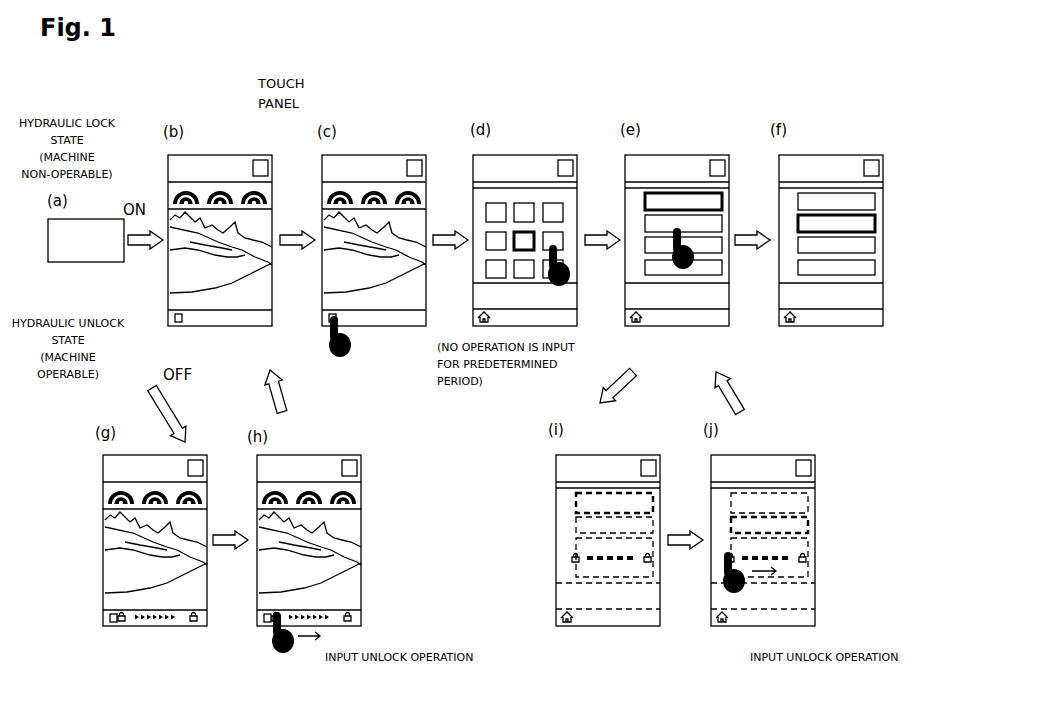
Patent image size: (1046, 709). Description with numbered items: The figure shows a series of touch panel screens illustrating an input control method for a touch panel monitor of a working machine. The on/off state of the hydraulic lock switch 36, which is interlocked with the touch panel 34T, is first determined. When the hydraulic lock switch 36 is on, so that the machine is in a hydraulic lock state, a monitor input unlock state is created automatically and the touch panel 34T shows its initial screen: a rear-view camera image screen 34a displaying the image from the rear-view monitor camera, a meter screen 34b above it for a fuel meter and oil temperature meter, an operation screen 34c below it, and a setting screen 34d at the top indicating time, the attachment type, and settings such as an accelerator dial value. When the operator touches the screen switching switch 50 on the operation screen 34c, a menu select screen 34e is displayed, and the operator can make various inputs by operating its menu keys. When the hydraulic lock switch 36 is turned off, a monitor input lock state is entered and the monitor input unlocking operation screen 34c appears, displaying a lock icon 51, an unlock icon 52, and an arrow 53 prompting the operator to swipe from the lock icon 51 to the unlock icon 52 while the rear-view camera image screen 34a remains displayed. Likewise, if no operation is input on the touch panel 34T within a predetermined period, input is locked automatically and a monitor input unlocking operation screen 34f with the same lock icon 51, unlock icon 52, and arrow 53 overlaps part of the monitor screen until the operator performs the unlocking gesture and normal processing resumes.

The touch panel 34T is at (227, 147).
The rear-view camera image screen 34a is at (260, 284).
The meter screen 34b is at (266, 194).
The operation screen 34c is at (262, 319).
The setting screen 34d is at (241, 153).
The menu select screen 34e is at (578, 243).
The monitor input unlocking operation screen 34f is at (596, 540).
The hydraulic lock switch 36 is at (83, 262).
The screen switching switch 50 is at (338, 318).
The lock icon 51 is at (120, 623).
The unlock icon 52 is at (193, 623).
The arrow 53 is at (157, 623).